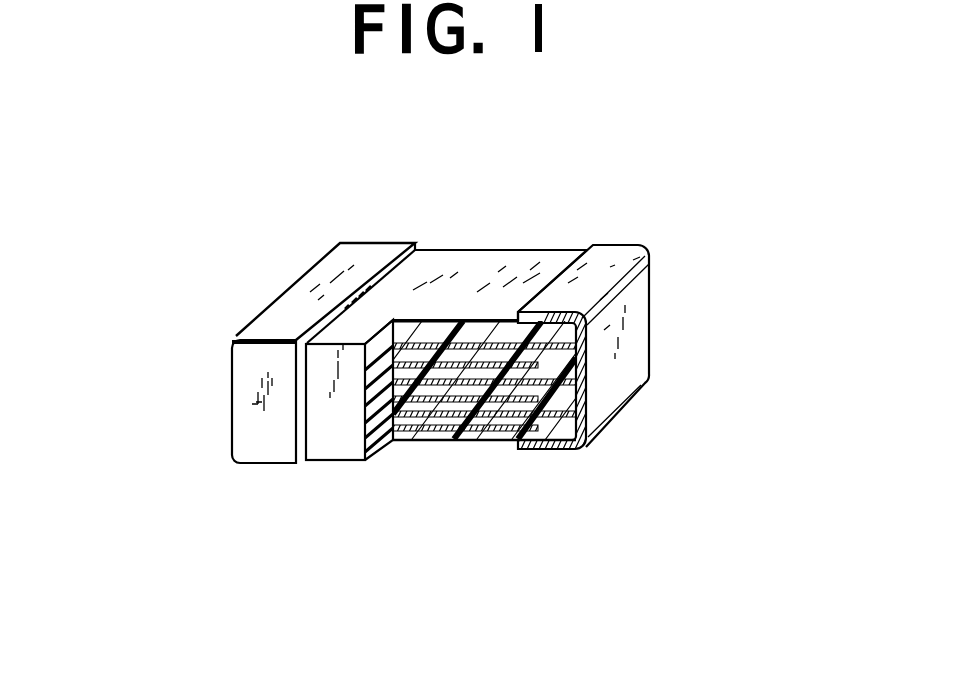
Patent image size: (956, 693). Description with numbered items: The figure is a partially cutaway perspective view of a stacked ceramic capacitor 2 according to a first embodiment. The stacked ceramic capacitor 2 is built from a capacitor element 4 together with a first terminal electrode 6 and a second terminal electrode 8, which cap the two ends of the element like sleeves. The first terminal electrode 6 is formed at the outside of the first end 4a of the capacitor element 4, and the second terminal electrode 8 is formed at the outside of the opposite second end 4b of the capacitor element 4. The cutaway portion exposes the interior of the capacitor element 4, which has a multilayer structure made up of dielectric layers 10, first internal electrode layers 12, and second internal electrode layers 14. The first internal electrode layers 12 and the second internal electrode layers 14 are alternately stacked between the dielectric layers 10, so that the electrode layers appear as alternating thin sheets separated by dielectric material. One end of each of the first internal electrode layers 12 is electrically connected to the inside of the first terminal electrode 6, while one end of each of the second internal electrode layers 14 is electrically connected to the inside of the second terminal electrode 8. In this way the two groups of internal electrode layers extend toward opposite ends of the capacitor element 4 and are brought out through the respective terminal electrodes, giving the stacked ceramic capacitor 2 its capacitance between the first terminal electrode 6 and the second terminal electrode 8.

The stacked ceramic capacitor 2 is at (541, 235).
The capacitor element 4 is at (453, 262).
The first end 4a is at (262, 397).
The second end 4b is at (558, 395).
The first terminal electrode 6 is at (297, 298).
The second terminal electrode 8 is at (632, 335).
The dielectric layers 10 is at (493, 430).
The first internal electrode layers 12 is at (437, 430).
The second internal electrode layers 14 is at (468, 338).